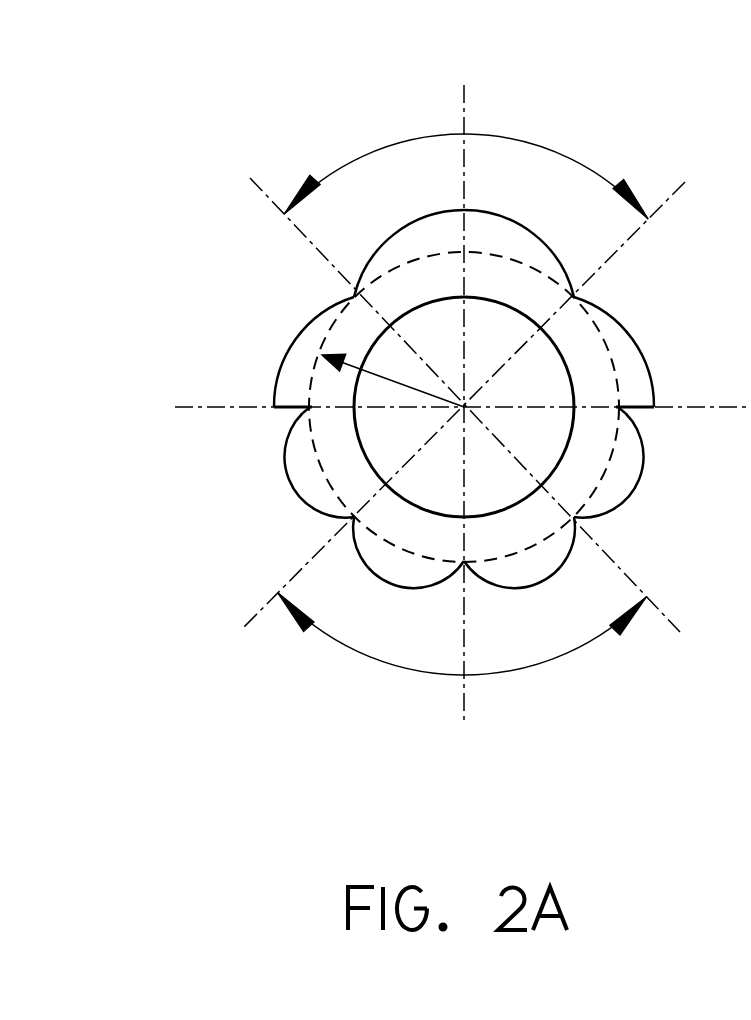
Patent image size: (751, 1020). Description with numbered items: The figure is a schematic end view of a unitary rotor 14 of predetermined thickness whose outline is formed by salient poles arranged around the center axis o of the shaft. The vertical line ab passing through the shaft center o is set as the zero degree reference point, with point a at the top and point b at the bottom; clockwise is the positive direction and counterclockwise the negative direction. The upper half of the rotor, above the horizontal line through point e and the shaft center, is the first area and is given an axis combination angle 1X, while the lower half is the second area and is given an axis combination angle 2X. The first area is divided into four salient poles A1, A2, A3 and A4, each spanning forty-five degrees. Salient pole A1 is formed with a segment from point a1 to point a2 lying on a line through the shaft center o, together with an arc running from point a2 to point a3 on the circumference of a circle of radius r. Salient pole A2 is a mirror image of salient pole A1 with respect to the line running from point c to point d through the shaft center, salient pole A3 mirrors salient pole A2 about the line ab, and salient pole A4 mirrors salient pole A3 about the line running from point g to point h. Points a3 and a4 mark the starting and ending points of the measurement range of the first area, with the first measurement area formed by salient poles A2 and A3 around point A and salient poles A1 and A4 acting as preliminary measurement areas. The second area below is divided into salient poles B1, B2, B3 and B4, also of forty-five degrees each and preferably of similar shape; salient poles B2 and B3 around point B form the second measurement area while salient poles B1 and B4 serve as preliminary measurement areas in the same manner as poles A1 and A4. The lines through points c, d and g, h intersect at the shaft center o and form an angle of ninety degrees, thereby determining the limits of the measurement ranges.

The rotor 14 is at (415, 395).
The salient pole A1 is at (291, 345).
The salient pole A2 is at (438, 212).
The salient pole A3 is at (494, 212).
The salient pole A4 is at (645, 344).
The point a1 is at (306, 411).
The point a2 is at (274, 404).
The point a3 is at (355, 295).
The point a4 is at (575, 295).
The salient pole B1 is at (296, 497).
The salient pole B2 is at (430, 588).
The salient pole B3 is at (490, 588).
The salient pole B4 is at (631, 498).
The point A is at (480, 278).
The point B is at (476, 534).
The radius r is at (393, 373).
The center axis of the shaft o is at (510, 393).
The axis combination angle 1X is at (465, 384).
The axis combination angle 2X is at (461, 750).
The point e is at (455, 424).
The point c is at (465, 390).
The point d is at (666, 645).
The point h is at (464, 392).
The point g is at (262, 636).
The point a is at (466, 156).
The point b is at (462, 656).